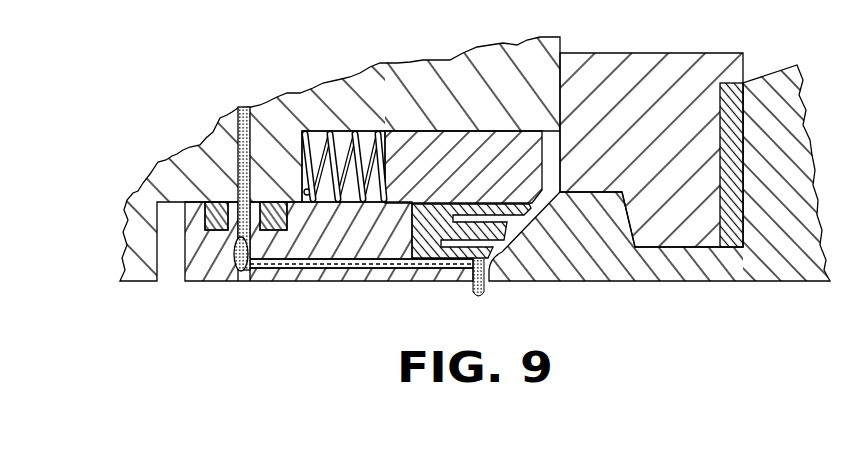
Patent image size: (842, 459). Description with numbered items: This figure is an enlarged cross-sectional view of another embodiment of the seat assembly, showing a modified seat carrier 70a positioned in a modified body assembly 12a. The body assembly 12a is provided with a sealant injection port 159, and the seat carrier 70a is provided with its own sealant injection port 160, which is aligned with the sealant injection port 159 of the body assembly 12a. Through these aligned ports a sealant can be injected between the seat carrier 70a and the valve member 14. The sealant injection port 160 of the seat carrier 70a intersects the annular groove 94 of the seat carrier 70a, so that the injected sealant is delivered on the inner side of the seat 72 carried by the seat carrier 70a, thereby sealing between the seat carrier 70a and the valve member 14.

The body assembly 12a is at (158, 162).
The valve member 14 is at (577, 282).
The sealant injection port 159 is at (243, 107).
The sealant injection port 160 is at (243, 272).
The seat carrier 70a is at (293, 282).
The annular groove 94 is at (398, 263).
The seat 72 is at (480, 298).